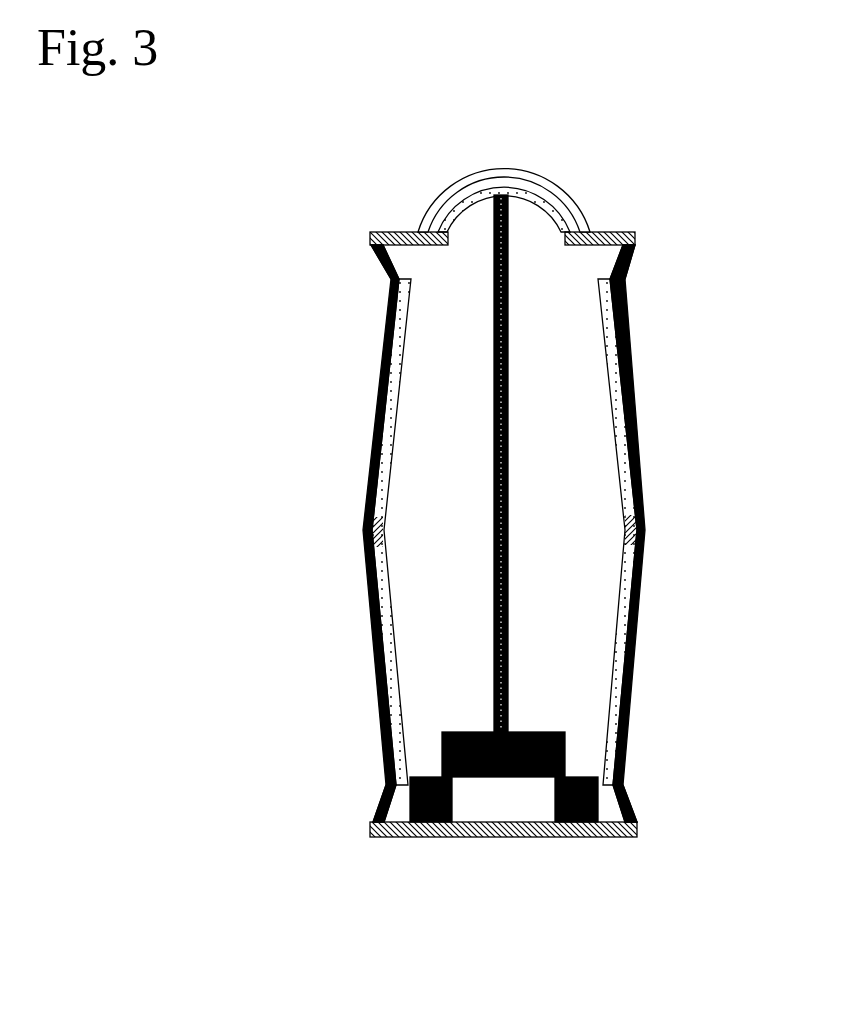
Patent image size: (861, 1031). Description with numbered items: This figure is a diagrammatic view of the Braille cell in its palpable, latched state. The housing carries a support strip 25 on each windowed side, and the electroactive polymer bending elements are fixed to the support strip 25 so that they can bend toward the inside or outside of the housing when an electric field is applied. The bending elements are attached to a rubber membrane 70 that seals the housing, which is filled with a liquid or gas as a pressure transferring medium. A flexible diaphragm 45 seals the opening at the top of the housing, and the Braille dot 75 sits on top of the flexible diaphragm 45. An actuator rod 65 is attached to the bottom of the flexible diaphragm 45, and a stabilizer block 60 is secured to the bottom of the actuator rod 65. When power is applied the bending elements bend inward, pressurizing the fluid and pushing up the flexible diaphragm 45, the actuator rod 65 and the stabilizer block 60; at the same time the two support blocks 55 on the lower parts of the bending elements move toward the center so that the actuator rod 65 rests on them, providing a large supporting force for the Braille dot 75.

The support strip 25 is at (644, 532).
The flexible diaphragm 45 is at (572, 221).
The support blocks 55 is at (432, 803).
The stabilizer block 60 is at (517, 772).
The actuator rod 65 is at (508, 417).
The rubber membrane 70 is at (383, 266).
The Braille dot 75 is at (530, 170).